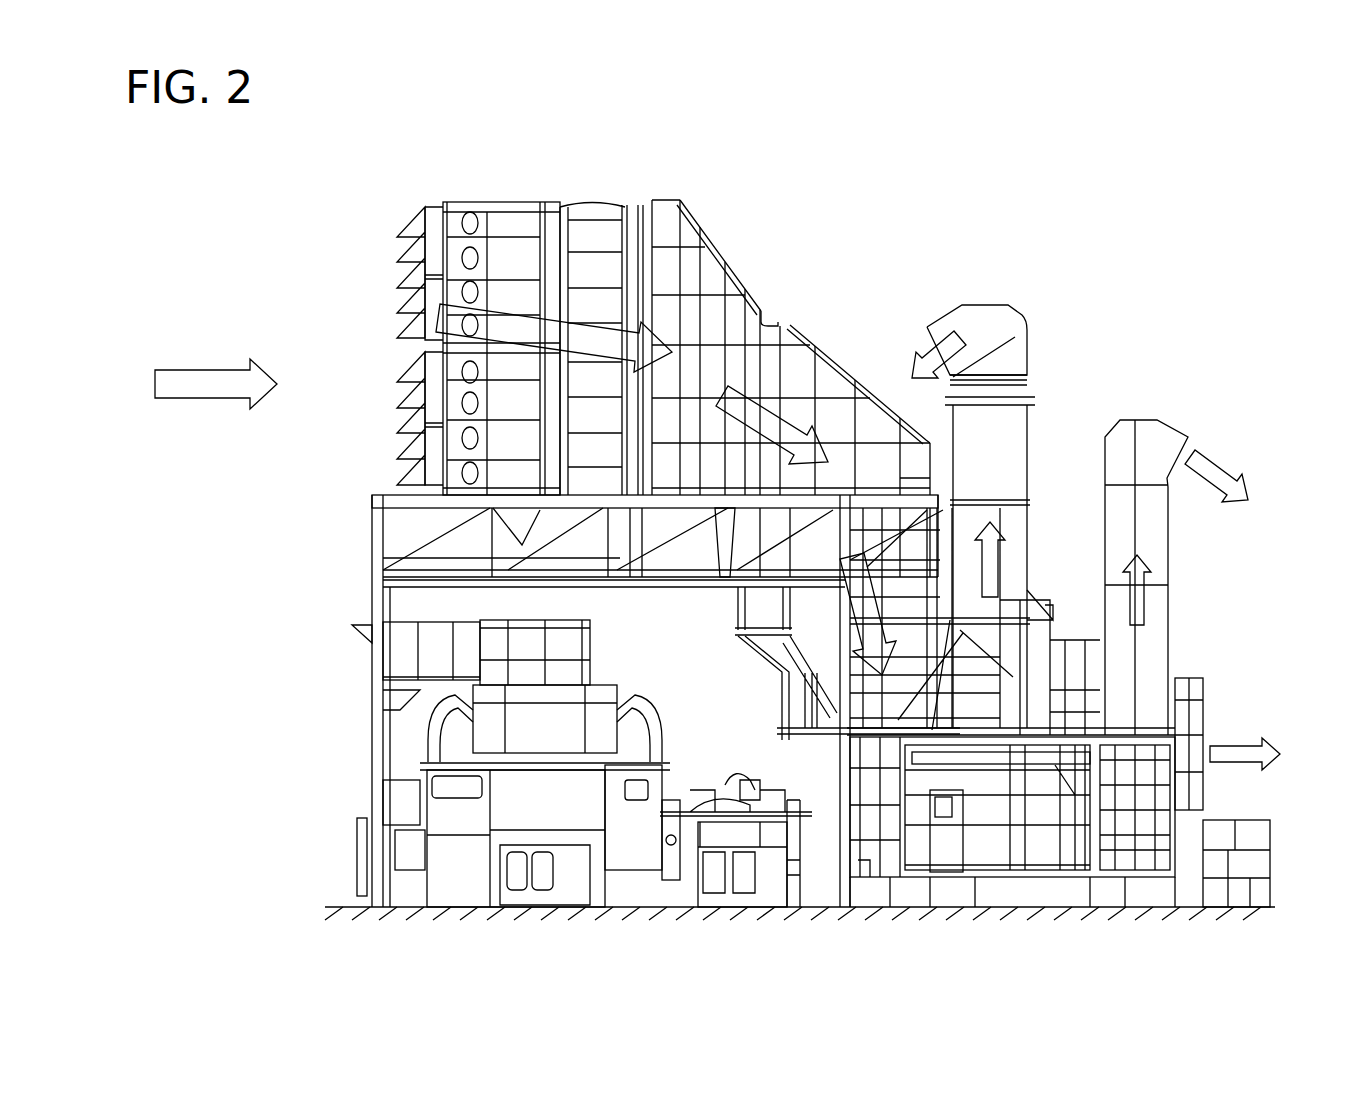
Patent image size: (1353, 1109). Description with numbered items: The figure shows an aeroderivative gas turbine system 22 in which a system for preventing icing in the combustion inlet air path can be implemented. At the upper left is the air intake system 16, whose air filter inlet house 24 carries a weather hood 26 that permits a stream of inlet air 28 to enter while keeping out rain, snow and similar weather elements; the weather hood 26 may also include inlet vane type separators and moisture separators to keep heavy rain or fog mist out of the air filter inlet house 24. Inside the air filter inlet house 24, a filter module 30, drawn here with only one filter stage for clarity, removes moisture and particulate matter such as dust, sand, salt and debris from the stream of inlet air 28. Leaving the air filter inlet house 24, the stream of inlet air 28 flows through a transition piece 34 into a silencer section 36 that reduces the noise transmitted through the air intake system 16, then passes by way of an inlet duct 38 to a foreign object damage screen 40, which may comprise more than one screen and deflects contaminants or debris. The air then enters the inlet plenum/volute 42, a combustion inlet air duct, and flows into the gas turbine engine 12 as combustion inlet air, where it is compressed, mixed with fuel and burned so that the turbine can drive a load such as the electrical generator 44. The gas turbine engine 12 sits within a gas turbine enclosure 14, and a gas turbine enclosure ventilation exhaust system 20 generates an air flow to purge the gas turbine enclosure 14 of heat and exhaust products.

The gas turbine engine 12 is at (994, 882).
The gas turbine enclosure 14 is at (1047, 880).
The air intake system 16 is at (412, 134).
The gas turbine enclosure ventilation exhaust system 20 is at (1172, 607).
The aeroderivative gas turbine system 22 is at (198, 290).
The air filter inlet house 24 is at (531, 164).
The weather hood 26 is at (402, 252).
The stream of inlet air 28 is at (216, 373).
The filter module 30 is at (466, 212).
The transition piece 34 is at (827, 344).
The silencer section 36 is at (797, 590).
The inlet duct 38 is at (797, 653).
The foreign object damage (FOD) screen 40 is at (914, 697).
The inlet plenum/volute 42 is at (885, 829).
The electrical generator 44 is at (412, 808).